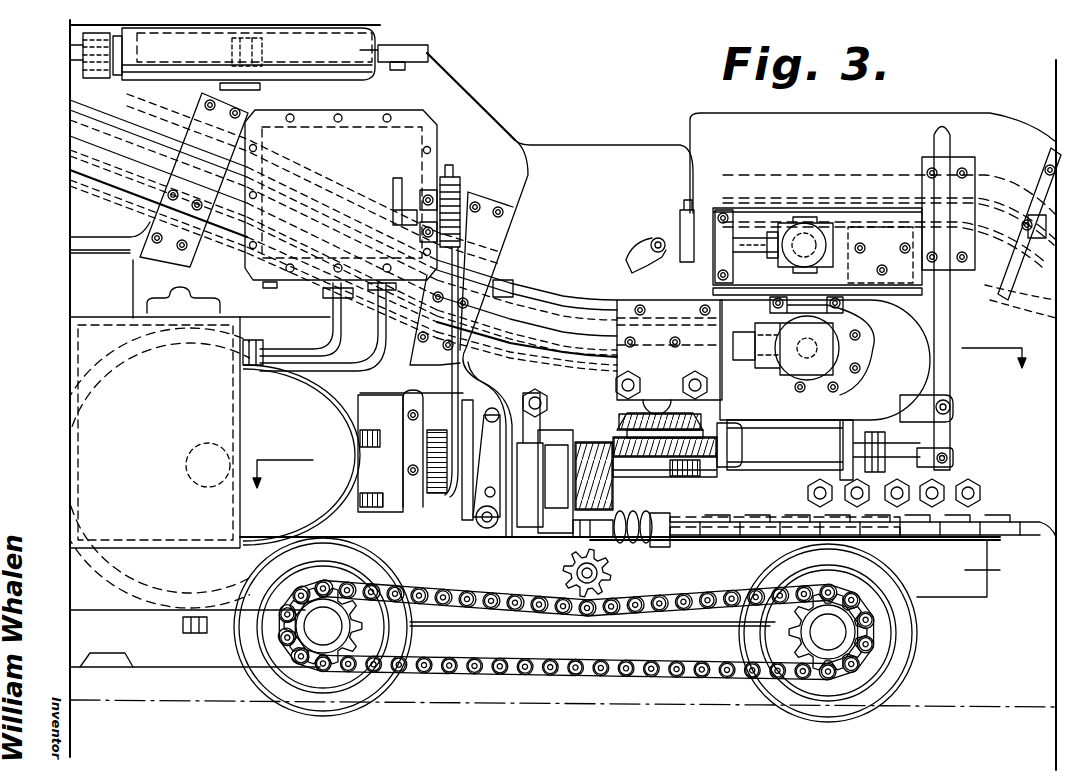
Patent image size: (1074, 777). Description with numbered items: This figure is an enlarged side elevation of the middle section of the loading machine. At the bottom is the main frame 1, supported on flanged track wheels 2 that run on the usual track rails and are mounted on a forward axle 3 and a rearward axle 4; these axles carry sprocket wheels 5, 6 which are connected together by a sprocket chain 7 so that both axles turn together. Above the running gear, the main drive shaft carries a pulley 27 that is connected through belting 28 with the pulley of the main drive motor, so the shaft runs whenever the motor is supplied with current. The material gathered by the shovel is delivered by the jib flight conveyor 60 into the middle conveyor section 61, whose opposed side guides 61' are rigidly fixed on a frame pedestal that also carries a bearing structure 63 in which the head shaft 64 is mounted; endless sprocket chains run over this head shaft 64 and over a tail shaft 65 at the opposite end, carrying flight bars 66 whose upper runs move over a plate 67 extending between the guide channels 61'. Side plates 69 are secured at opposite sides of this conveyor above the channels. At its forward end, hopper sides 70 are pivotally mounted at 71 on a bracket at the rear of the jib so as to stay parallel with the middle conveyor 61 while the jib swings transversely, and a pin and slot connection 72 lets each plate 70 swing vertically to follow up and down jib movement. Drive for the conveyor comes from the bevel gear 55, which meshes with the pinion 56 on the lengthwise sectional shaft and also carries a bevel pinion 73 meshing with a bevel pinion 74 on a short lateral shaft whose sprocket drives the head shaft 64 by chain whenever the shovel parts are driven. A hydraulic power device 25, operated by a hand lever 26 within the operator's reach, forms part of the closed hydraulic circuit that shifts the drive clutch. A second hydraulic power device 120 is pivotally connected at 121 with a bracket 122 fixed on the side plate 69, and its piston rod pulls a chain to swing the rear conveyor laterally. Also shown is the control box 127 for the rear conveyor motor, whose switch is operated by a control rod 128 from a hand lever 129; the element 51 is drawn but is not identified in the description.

The main frame 1 is at (823, 549).
The track wheels 2 is at (328, 683).
The forward axle 3 is at (830, 633).
The rearward axle 4 is at (322, 632).
The sprocket wheel 5 is at (757, 680).
The sprocket wheel 6 is at (377, 693).
The sprocket chain 7 is at (540, 675).
The hydraulic power device 25 is at (757, 468).
The hand lever 26 is at (947, 380).
The pulley 27 is at (260, 397).
The belting 28 is at (190, 468).
The lever 51 is at (360, 447).
The bevel gear 55 is at (627, 417).
The pinion 56 is at (610, 490).
The flight conveyor 60 is at (993, 200).
The middle conveyor section 61 is at (527, 302).
The side guides 61' is at (253, 216).
The bearing structure 63 is at (669, 350).
The head shaft 64 is at (840, 345).
The tail shaft 65 is at (767, 385).
The flight bars 66 is at (125, 282).
The plate 67 is at (527, 257).
The side plates 69 is at (443, 95).
The hopper sides 70 is at (570, 157).
The pivot 71 is at (722, 177).
The pin and slot connection 72 is at (653, 240).
The bevel pinion 73 is at (693, 435).
The bevel pinion 74 is at (623, 403).
The hydraulic power device 120 is at (133, 83).
The pivotal connection 121 is at (393, 45).
The bracket 122 is at (437, 58).
The control box 127 is at (403, 155).
The control rod 128 is at (452, 370).
The hand lever 129 is at (686, 554).